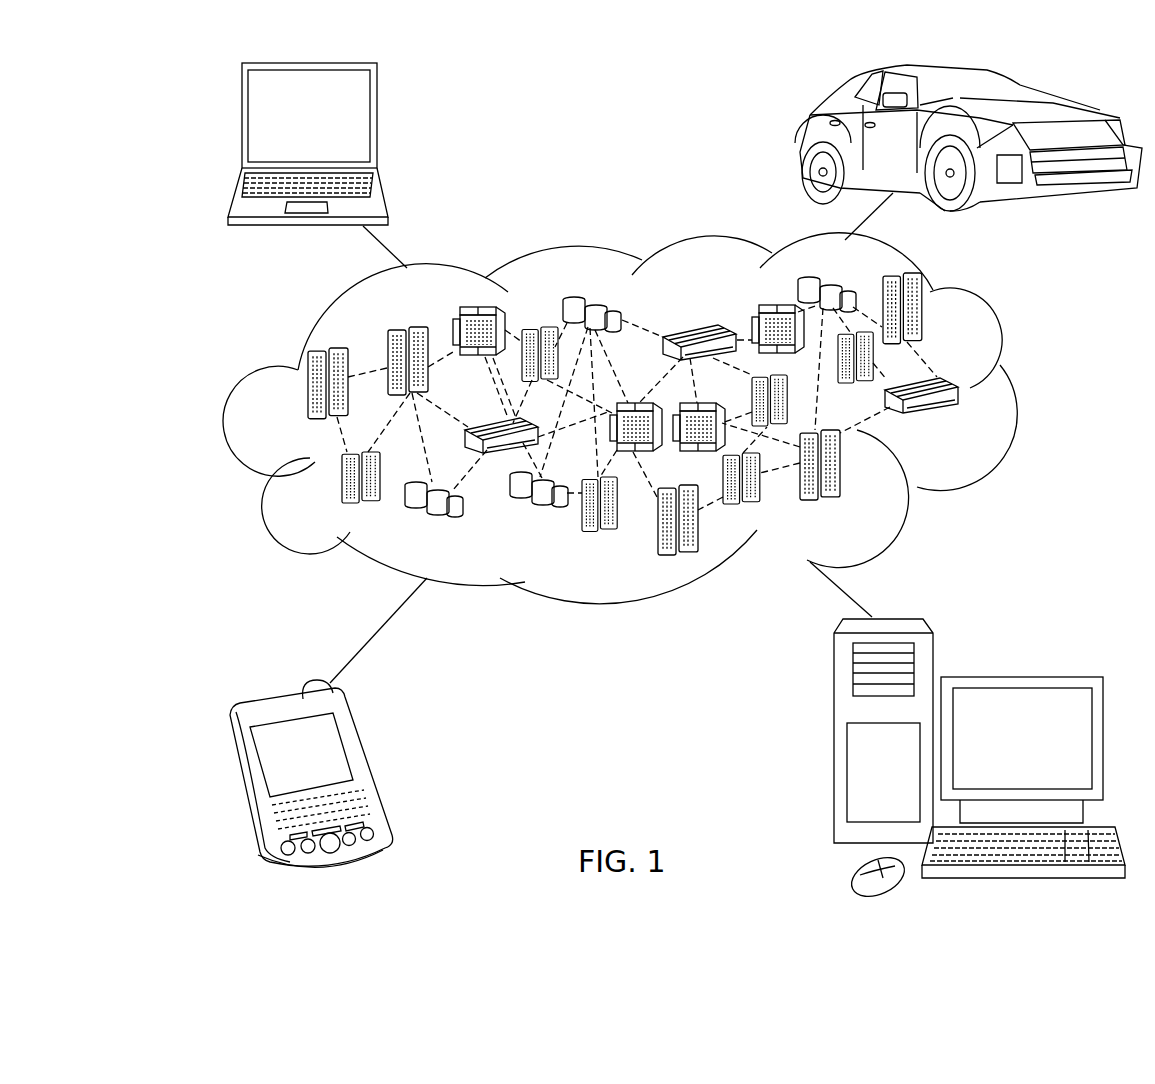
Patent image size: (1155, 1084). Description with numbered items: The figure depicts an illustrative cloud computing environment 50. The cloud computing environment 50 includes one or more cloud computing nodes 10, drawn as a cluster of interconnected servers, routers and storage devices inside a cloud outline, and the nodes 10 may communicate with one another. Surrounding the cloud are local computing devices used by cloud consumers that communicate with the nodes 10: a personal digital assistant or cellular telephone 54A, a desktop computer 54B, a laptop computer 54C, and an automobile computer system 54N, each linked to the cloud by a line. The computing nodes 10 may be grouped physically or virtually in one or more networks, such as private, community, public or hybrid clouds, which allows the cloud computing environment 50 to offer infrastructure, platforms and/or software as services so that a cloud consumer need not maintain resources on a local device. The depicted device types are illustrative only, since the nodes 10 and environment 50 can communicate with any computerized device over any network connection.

The cloud computing node 10 is at (983, 427).
The cloud computing environment 50 is at (1018, 390).
The personal digital assistant or cellular telephone 54A is at (363, 767).
The desktop computer 54B is at (1018, 675).
The laptop computer 54C is at (375, 125).
The automobile computer system 54N is at (803, 140).